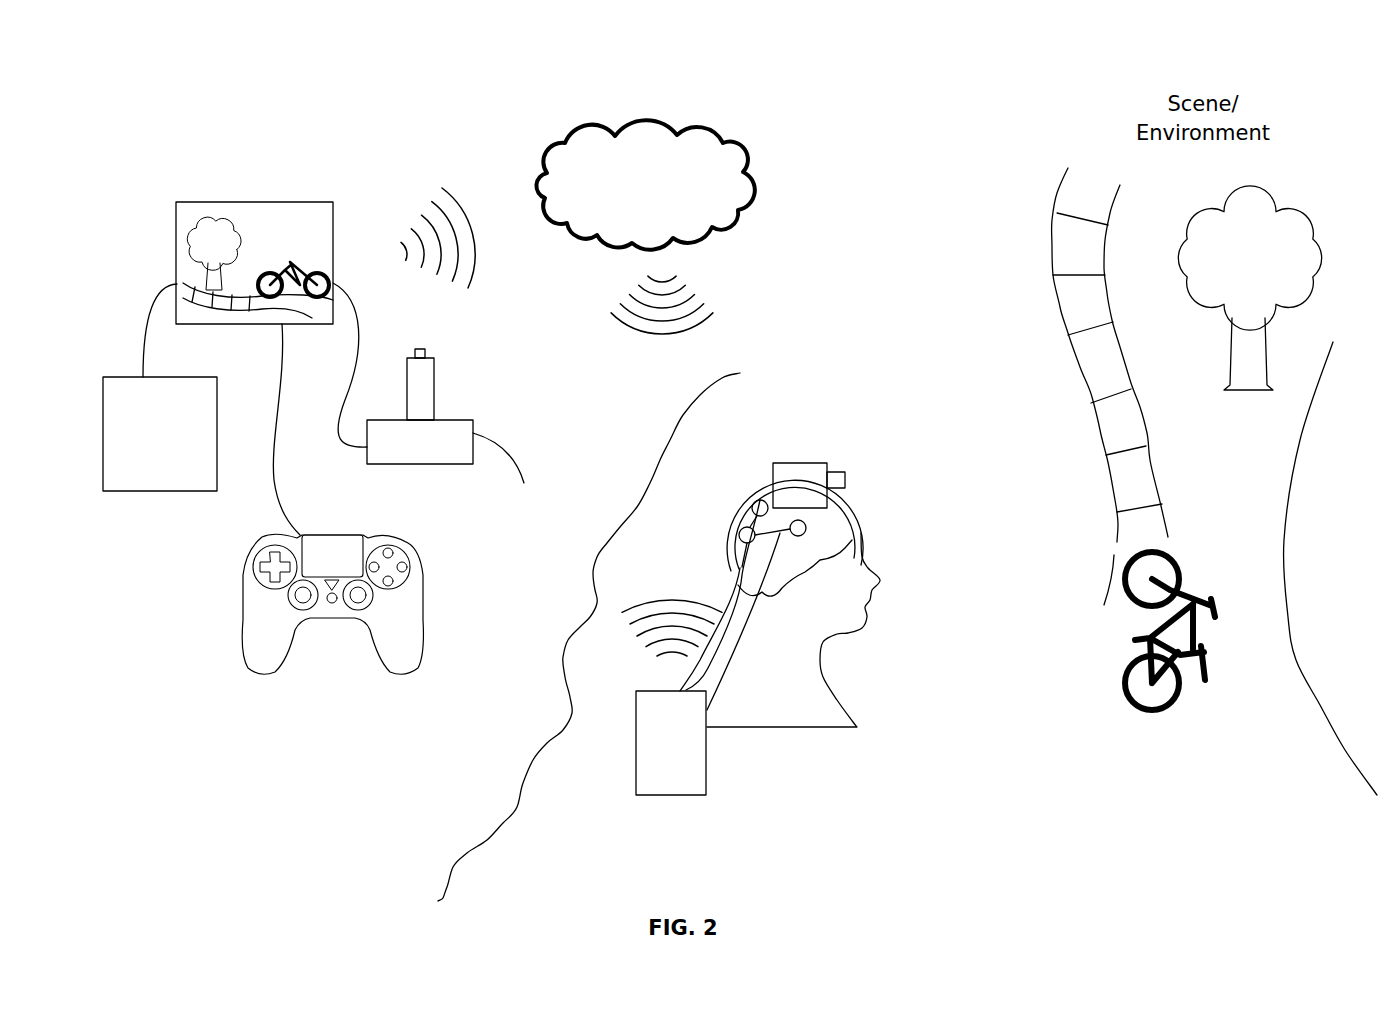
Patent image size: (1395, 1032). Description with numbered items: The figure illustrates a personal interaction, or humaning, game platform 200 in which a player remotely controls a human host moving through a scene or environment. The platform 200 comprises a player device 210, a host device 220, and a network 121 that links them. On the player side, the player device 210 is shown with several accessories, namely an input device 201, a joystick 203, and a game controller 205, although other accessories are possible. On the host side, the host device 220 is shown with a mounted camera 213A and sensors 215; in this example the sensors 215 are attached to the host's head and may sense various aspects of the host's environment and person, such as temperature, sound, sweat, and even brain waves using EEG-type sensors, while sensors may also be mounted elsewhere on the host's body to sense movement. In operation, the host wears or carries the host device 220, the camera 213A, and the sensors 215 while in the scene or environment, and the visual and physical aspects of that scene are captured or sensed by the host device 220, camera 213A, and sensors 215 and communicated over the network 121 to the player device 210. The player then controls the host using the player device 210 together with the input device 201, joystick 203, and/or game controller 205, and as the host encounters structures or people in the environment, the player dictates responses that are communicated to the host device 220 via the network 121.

The humaning game platform 200 is at (183, 80).
The player device 210 is at (258, 202).
The input device 201 is at (160, 387).
The joystick 203 is at (450, 422).
The game controller 205 is at (415, 650).
The network 121 is at (645, 185).
The camera 213A is at (795, 463).
The sensors 215 is at (806, 530).
The host device 220 is at (706, 765).